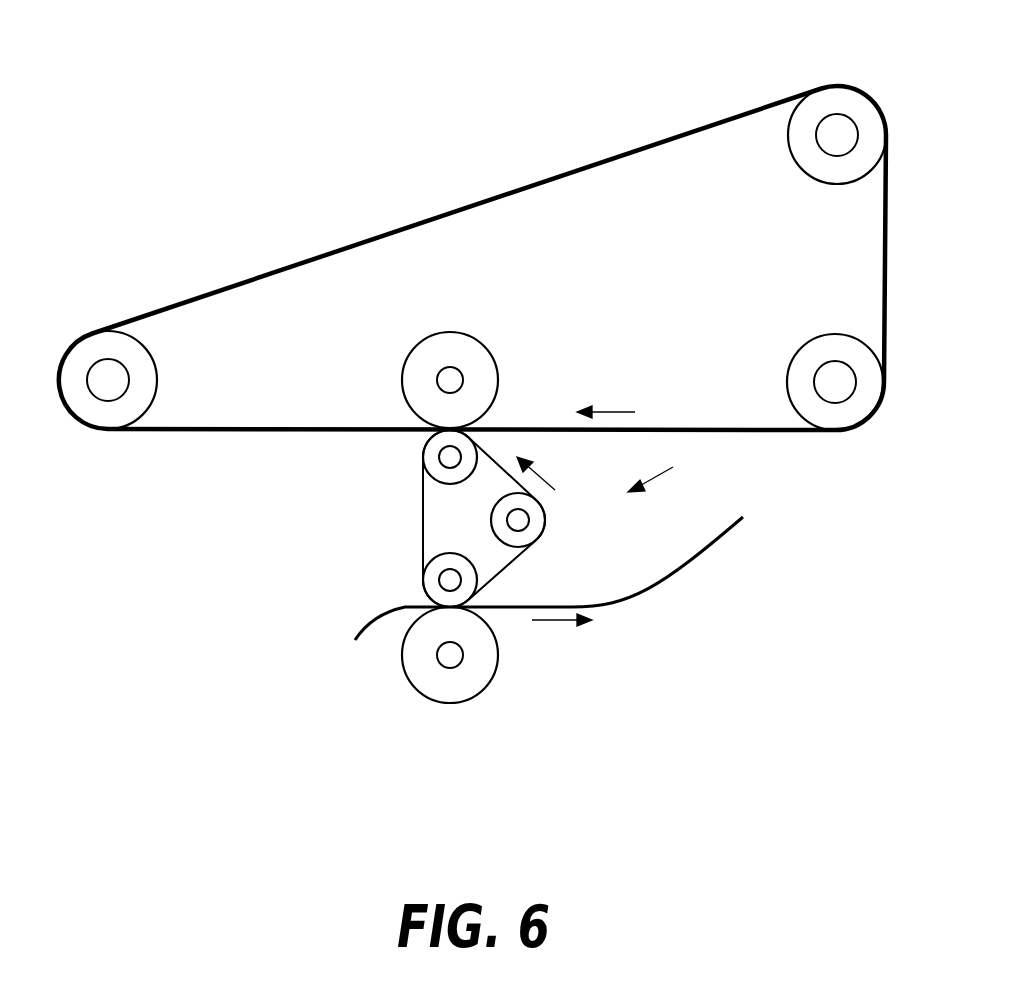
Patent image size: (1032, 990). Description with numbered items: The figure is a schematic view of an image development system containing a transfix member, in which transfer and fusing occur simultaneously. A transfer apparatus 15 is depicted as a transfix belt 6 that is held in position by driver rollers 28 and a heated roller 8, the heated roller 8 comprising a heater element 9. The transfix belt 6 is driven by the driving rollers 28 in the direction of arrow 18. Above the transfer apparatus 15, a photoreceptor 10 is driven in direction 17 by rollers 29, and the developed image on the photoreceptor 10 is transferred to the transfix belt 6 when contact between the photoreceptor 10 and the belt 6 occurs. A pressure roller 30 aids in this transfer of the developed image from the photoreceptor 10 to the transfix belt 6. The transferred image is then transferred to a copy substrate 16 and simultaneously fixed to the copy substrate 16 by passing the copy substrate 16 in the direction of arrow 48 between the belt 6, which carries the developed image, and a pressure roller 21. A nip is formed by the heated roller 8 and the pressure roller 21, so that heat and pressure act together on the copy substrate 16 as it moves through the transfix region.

The photoreceptor 10 is at (178, 455).
The rollers 29 is at (79, 355).
The pressure roller 30 is at (475, 352).
The direction 17 is at (613, 410).
The arrow 18 is at (543, 477).
The transfer apparatus 15 is at (718, 478).
The driver rollers 28 is at (430, 450).
The transfix belt 6 is at (422, 490).
The heater element 9 is at (450, 577).
The heated roller 8 is at (430, 593).
The copy substrate 16 is at (678, 567).
The arrow 48 is at (560, 623).
The pressure roller 21 is at (442, 690).